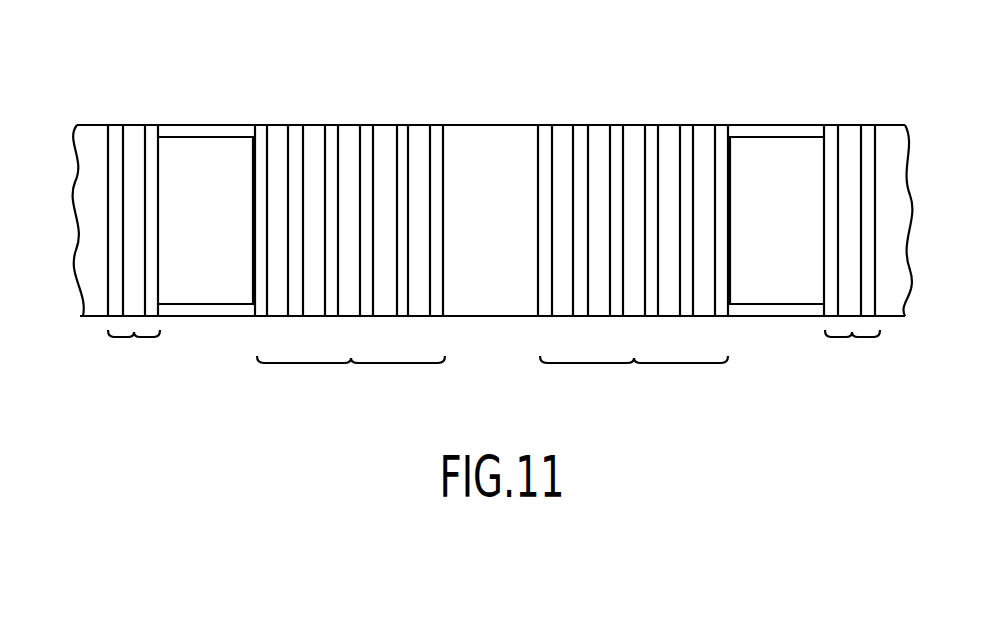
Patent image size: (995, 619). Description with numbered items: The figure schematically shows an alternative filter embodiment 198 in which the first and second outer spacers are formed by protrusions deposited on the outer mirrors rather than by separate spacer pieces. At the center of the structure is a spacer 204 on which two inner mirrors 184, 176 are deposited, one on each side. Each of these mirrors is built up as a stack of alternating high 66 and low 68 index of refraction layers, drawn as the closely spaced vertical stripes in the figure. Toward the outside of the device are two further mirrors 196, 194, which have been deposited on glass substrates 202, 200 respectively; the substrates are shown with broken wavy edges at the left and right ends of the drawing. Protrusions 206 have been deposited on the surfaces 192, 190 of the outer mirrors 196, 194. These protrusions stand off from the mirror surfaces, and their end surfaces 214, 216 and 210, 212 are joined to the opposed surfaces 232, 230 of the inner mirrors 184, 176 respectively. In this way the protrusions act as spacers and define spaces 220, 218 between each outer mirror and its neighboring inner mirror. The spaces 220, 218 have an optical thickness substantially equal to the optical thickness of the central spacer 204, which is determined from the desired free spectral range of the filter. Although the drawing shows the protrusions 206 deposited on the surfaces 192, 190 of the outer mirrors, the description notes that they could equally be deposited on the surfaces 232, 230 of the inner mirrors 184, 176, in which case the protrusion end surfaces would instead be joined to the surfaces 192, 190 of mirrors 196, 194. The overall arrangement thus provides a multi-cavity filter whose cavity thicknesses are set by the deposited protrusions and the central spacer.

The exemplary embodiment 198 is at (81, 115).
The high index of refraction layer 66 is at (118, 128).
The low index of refraction layer 68 is at (347, 128).
The protrusions 206 is at (200, 128).
The end surface 214 is at (258, 128).
The end surface 216 is at (258, 318).
The end surface 210 is at (726, 128).
The end surface 212 is at (725, 318).
The opposed surface 232 is at (254, 200).
The surface 192 is at (159, 265).
The surface 190 is at (823, 205).
The opposed surface 230 is at (729, 265).
The space 220 is at (190, 240).
The space 218 is at (760, 240).
The spacer 204 is at (511, 250).
The mirror 196 is at (134, 353).
The mirror 194 is at (852, 352).
The mirror 184 is at (351, 380).
The mirror 176 is at (634, 380).
The glass substrate 202 is at (81, 318).
The glass substrate 200 is at (903, 318).